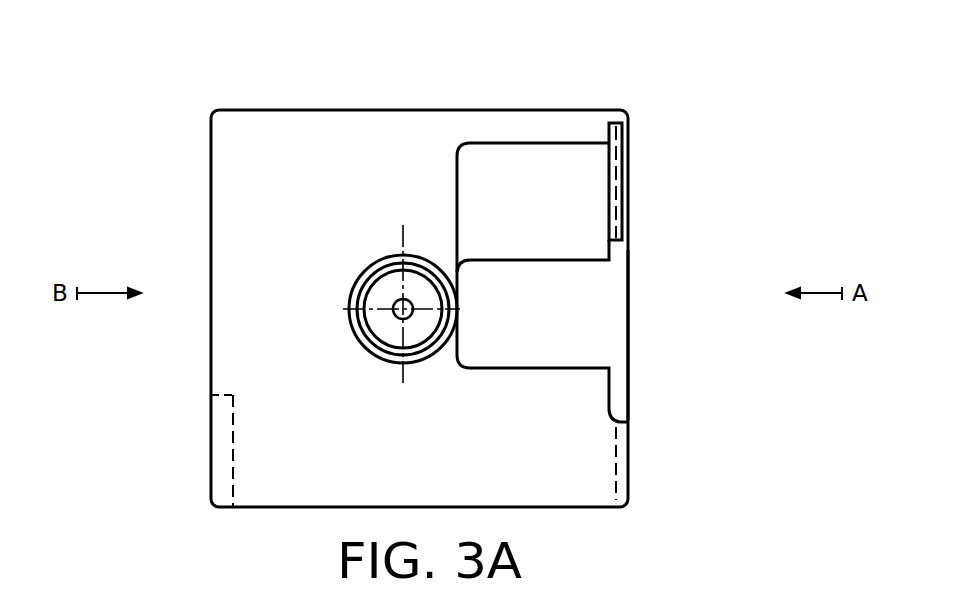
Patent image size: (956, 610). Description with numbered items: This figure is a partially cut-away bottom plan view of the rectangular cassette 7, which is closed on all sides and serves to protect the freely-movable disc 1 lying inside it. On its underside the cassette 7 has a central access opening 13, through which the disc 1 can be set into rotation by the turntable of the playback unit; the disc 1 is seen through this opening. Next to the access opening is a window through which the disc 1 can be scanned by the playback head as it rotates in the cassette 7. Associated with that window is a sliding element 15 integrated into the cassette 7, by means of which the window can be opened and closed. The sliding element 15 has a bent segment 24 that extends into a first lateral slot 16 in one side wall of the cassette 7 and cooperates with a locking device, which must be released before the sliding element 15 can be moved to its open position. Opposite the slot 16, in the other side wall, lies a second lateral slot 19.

The cassette 7 is at (383, 110).
The disc 1 is at (388, 282).
The central access opening 13 is at (366, 352).
The sliding element 15 is at (517, 348).
The first lateral slot 16 is at (618, 178).
The bent segment 24 is at (629, 324).
The second lateral slot 19 is at (220, 440).